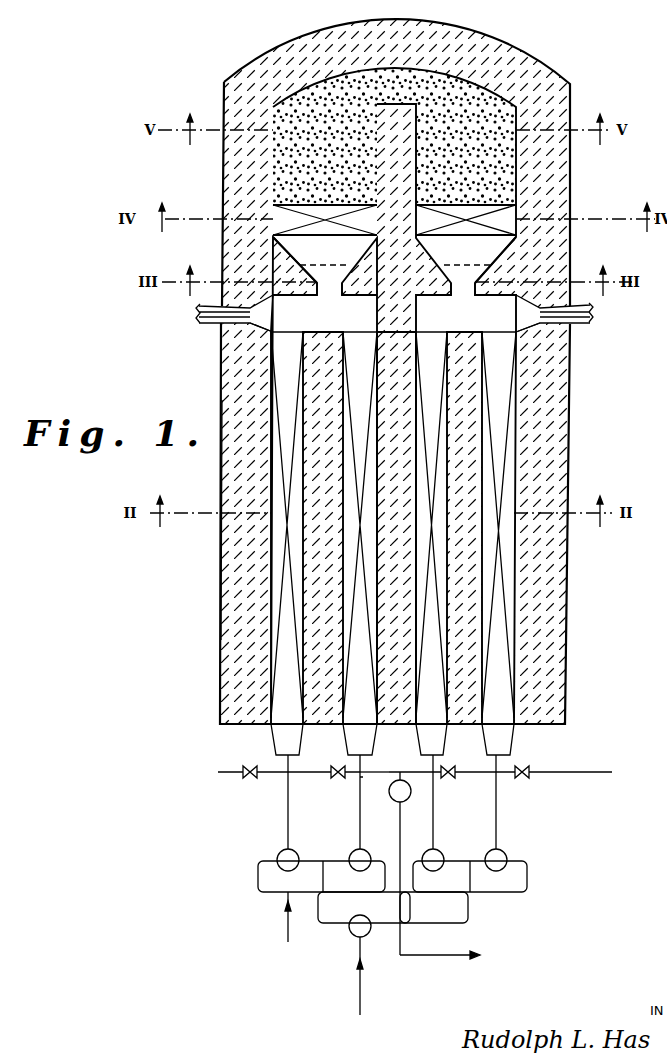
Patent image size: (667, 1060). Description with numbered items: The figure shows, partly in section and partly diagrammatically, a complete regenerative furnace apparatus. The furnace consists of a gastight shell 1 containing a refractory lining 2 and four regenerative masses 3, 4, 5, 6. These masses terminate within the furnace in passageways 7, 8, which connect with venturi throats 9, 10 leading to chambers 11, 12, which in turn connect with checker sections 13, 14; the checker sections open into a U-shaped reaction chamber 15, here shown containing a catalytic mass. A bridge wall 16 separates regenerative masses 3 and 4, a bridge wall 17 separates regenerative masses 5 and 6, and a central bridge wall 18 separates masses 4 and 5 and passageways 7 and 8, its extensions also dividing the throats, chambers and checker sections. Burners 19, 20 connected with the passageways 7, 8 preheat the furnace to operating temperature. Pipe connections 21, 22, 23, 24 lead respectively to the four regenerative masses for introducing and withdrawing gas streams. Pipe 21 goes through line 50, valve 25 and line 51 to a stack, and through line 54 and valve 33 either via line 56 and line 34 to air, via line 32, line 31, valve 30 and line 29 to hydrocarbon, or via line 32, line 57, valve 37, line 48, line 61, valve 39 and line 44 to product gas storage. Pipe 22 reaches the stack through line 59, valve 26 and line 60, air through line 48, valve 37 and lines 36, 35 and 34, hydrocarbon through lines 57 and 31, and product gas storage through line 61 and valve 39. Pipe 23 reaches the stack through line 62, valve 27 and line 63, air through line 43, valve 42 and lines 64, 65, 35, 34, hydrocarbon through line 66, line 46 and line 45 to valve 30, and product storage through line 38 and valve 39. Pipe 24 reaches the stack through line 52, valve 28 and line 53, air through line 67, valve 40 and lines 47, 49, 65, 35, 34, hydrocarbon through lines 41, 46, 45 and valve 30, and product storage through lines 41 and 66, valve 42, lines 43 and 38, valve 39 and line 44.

The gastight shell 1 is at (222, 483).
The refractory lining 2 is at (236, 535).
The regenerative mass 3 is at (287, 409).
The regenerative mass 4 is at (362, 390).
The regenerative mass 5 is at (437, 423).
The regenerative mass 6 is at (500, 386).
The passageway 7 is at (262, 325).
The passageway 8 is at (540, 332).
The venturi throat 9 is at (328, 286).
The venturi throat 10 is at (467, 283).
The chamber 11 is at (298, 247).
The chamber 12 is at (488, 248).
The checker section 13 is at (298, 203).
The checker section 14 is at (503, 203).
The reaction chamber 15 is at (488, 98).
The bridge wall 16 is at (312, 615).
The bridge wall 17 is at (465, 626).
The central bridge wall 18 is at (413, 592).
The burner 19 is at (197, 316).
The burner 20 is at (592, 315).
The pipe connection 21 is at (294, 758).
The pipe connection 22 is at (370, 758).
The pipe connection 23 is at (437, 758).
The pipe connection 24 is at (500, 760).
The valve 25 is at (250, 779).
The valve 26 is at (347, 779).
The valve 27 is at (448, 782).
The valve 28 is at (518, 780).
The line 29 is at (357, 972).
The valve 30 is at (353, 917).
The line 31 is at (323, 878).
The line 32 is at (312, 859).
The valve 33 is at (280, 852).
The line 34 is at (285, 900).
The line 35 is at (310, 894).
The line 36 is at (392, 862).
The valve 37 is at (367, 852).
The line 38 is at (400, 781).
The valve 39 is at (403, 803).
The valve 40 is at (506, 852).
The line 41 is at (473, 860).
The valve 42 is at (440, 850).
The line 43 is at (437, 804).
The line 44 is at (403, 939).
The line 45 is at (455, 929).
The line 46 is at (470, 882).
The line 47 is at (528, 866).
The line 48 is at (360, 807).
The line 49 is at (512, 895).
The line 50 is at (272, 764).
The line 51 is at (232, 772).
The line 52 is at (508, 783).
The line 53 is at (577, 772).
The line 54 is at (287, 812).
The line 56 is at (258, 878).
The line 57 is at (337, 856).
The line 59 is at (356, 778).
The line 60 is at (327, 773).
The line 61 is at (376, 794).
The line 62 is at (445, 768).
The line 63 is at (462, 774).
The line 64 is at (421, 862).
The line 65 is at (392, 894).
The line 66 is at (470, 880).
The line 67 is at (499, 822).